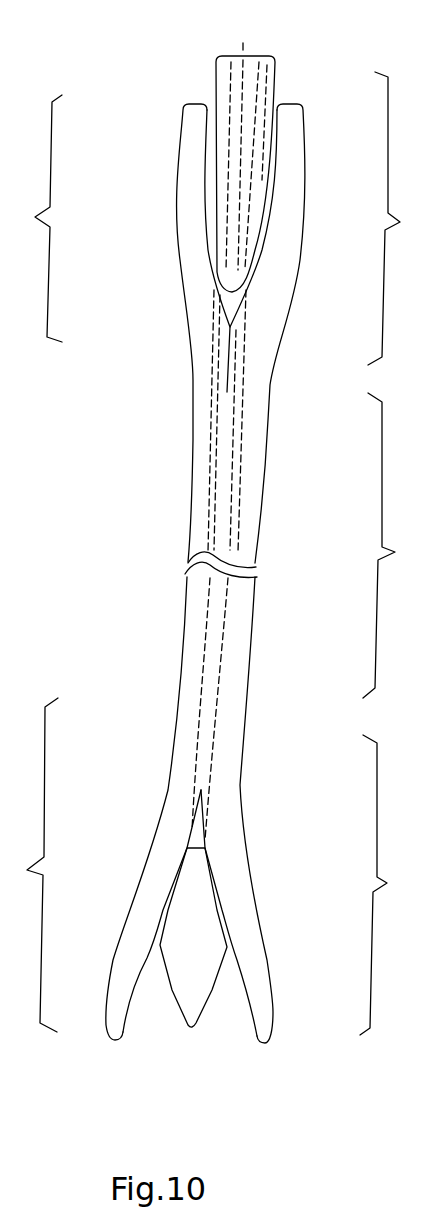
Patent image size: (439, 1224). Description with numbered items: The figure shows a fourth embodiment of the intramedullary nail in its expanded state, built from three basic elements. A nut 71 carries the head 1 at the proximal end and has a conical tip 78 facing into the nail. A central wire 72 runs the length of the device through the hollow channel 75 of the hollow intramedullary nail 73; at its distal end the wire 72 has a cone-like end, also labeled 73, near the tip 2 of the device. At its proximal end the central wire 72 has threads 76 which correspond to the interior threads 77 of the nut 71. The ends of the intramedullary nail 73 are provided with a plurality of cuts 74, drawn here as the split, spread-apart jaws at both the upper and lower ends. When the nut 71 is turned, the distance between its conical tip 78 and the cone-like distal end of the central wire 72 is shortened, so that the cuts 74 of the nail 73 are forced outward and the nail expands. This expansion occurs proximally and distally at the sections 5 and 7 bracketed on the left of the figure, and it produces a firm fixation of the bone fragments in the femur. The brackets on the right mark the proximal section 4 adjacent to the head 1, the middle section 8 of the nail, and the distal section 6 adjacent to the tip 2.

The head 1 is at (220, 54).
The tip 2 is at (193, 1028).
The proximal section 4 is at (425, 240).
The proximal expansion section 5 is at (38, 218).
The distal section 6 is at (413, 902).
The distal expansion section 7 is at (33, 865).
The middle section 8 is at (420, 567).
The nut 71 is at (221, 87).
The central wire 72 is at (238, 433).
The hollow intramedullary nail 73 is at (248, 670).
The cuts 74 is at (133, 1022).
The hollow channel 75 is at (212, 450).
The threads 76 is at (244, 294).
The interior threads 77 is at (255, 123).
The conical tip 78 is at (265, 222).